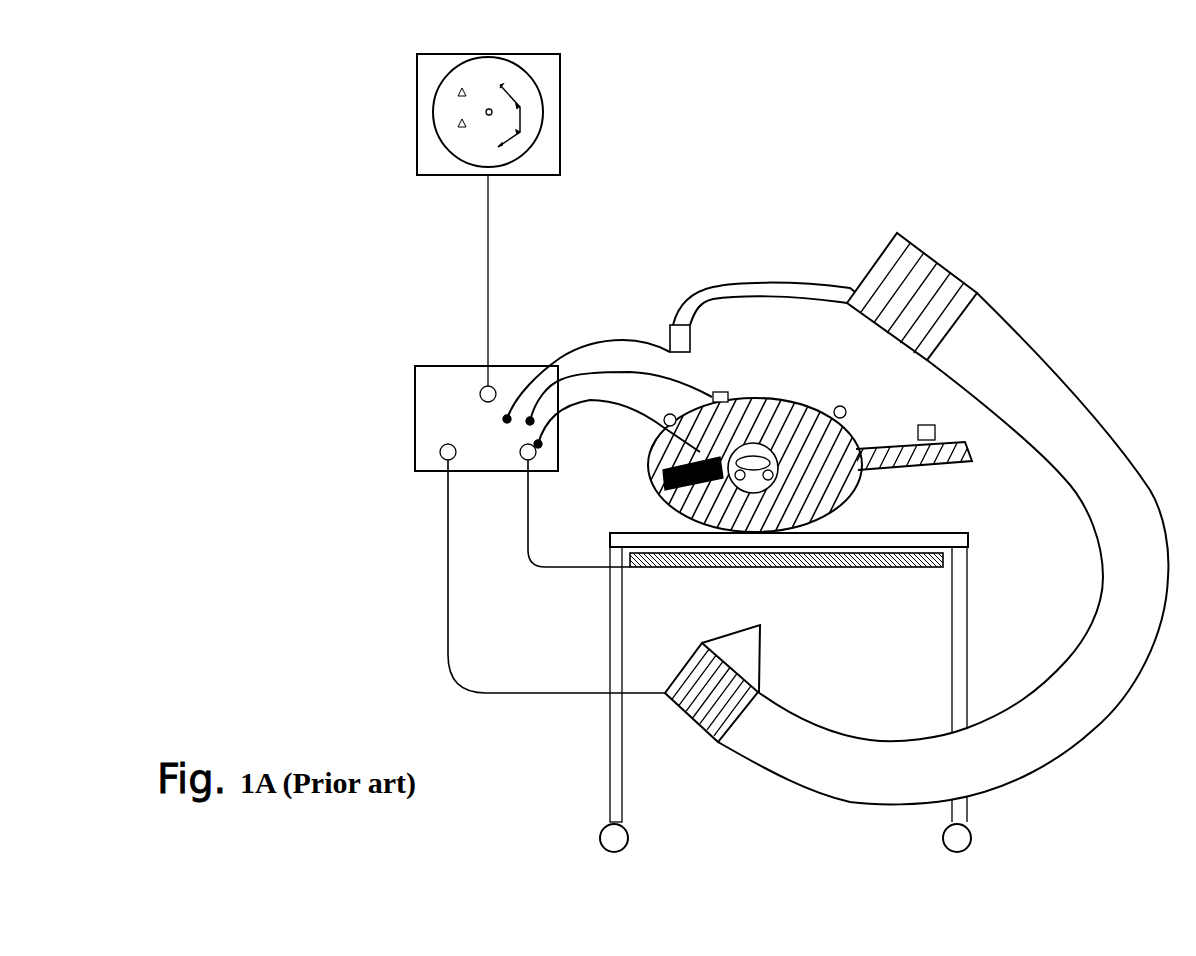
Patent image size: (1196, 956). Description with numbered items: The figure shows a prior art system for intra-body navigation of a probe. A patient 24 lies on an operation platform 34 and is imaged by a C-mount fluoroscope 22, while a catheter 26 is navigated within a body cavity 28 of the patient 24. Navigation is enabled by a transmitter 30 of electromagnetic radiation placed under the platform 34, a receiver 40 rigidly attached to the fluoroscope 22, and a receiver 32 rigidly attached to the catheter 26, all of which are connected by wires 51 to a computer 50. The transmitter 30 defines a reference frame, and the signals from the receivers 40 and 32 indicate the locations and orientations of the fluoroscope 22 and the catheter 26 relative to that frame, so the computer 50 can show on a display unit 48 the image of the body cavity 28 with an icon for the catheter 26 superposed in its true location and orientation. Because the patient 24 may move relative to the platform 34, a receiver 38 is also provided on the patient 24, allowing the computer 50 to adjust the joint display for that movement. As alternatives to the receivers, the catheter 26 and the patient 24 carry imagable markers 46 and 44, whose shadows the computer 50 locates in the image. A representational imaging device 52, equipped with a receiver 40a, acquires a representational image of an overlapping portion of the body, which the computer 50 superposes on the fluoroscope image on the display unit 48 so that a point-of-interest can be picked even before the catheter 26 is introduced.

The C-mount fluoroscope 22 is at (1017, 362).
The patient 24 is at (863, 442).
The catheter 26 is at (753, 443).
The body cavity 28 is at (767, 482).
The transmitter 30 is at (835, 568).
The receiver 32 is at (777, 467).
The operation platform 34 is at (963, 665).
The receiver 38 is at (718, 392).
The receiver 40 is at (672, 333).
The receiver 40a is at (934, 432).
The imagable marker 44 is at (667, 414).
The imagable marker 46 is at (732, 474).
The display unit 48 is at (553, 98).
The computer 50 is at (452, 378).
The wires 51 is at (590, 400).
The representational imaging device 52 is at (960, 461).